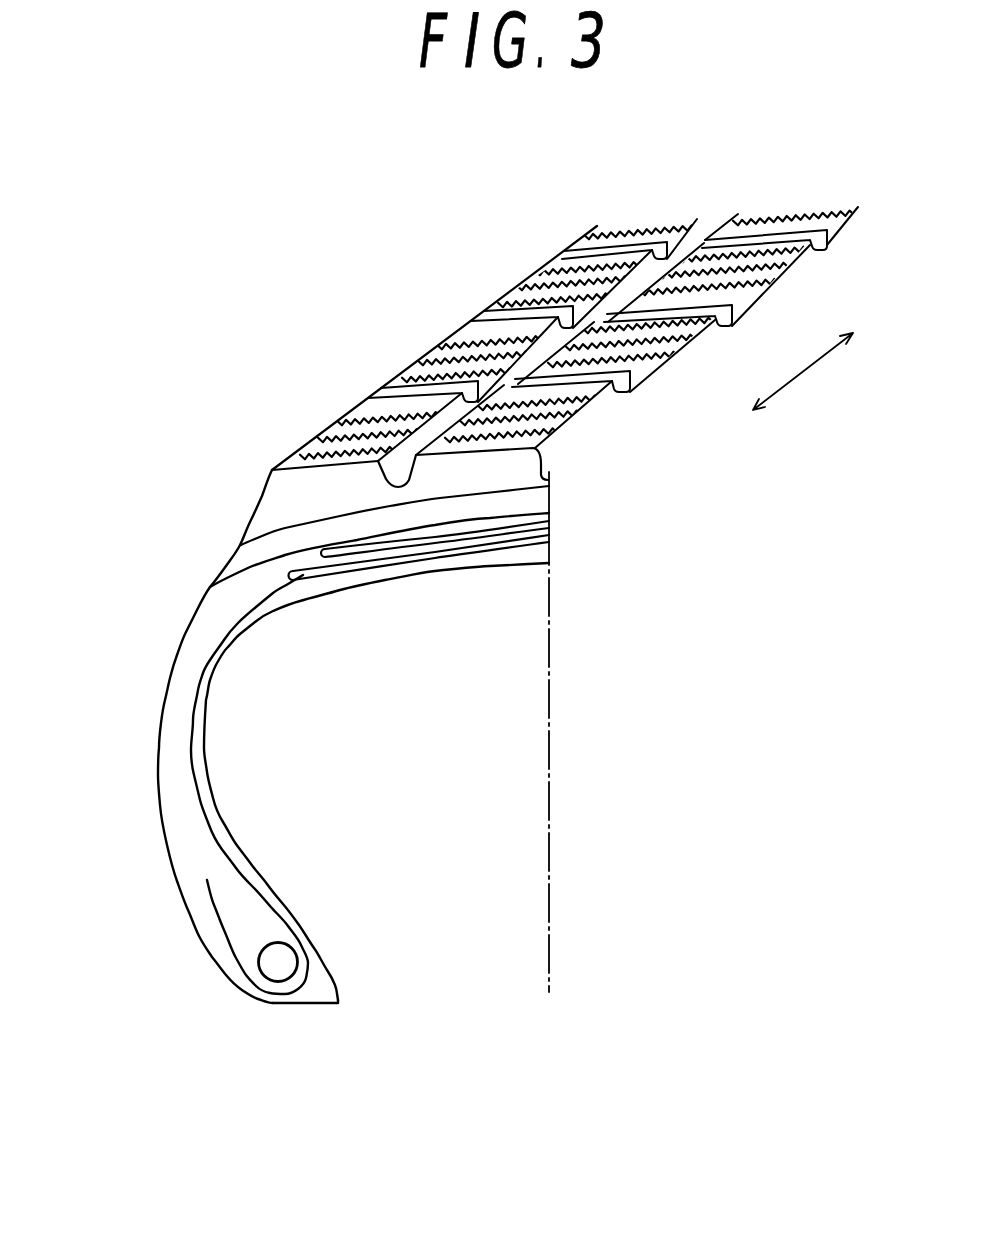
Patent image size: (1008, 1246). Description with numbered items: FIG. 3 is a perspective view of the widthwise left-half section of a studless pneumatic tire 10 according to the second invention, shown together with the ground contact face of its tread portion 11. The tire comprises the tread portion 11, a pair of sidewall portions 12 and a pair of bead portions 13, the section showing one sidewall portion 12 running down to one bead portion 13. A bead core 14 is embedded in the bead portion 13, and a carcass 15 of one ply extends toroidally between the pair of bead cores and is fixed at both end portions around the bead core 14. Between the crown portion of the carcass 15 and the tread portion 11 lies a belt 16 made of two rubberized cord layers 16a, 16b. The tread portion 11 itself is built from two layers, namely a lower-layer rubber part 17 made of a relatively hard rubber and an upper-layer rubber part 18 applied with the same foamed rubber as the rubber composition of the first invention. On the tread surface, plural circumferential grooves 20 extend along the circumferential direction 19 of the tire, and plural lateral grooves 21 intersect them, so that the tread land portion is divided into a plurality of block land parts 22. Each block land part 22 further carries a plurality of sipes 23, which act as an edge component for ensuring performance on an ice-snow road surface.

The pneumatic tire 10 is at (418, 312).
The tread portion 11 is at (483, 450).
The sidewall portion 12 is at (155, 690).
The bead portion 13 is at (185, 960).
The bead core 14 is at (278, 965).
The carcass 15 is at (262, 607).
The belt 16 is at (419, 652).
The rubberized cord layer 16a is at (428, 556).
The rubberized cord layer 16b is at (517, 527).
The lower-layer rubber part 17 is at (238, 558).
The upper-layer rubber part 18 is at (280, 493).
The circumferential direction 19 is at (803, 378).
The circumferential groove 20 is at (396, 468).
The lateral groove 21 is at (523, 317).
The block land part 22 is at (557, 314).
The sipe 23 is at (600, 367).